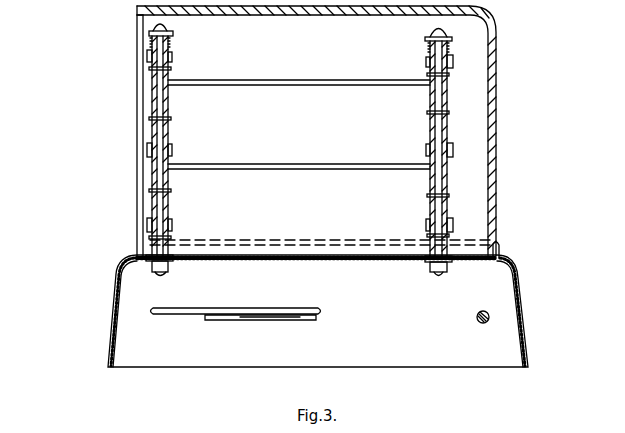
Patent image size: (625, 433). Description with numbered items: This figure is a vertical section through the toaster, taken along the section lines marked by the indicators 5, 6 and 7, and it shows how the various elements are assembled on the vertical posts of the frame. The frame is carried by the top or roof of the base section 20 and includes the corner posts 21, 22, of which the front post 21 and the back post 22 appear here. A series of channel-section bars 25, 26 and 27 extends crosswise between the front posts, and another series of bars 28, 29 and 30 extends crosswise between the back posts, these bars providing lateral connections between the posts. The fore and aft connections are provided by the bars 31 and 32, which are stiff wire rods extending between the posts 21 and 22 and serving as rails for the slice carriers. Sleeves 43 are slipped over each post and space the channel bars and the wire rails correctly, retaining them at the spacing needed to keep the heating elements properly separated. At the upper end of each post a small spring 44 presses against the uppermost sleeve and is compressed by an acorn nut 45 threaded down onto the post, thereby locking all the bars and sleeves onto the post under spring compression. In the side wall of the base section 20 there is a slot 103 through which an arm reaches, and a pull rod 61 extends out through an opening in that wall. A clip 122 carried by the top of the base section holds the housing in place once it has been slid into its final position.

The section line 5 is at (150, 271).
The section line 6 is at (57, 290).
The section line 7 is at (197, 18).
The base section 20 is at (210, 369).
The corner post 21 is at (160, 118).
The corner post 22 is at (438, 118).
The bar 25 is at (150, 59).
The bar 26 is at (150, 151).
The bar 27 is at (150, 226).
The bar 28 is at (450, 62).
The bar 29 is at (450, 152).
The bar 30 is at (452, 228).
The bar 31 is at (318, 80).
The bar 32 is at (332, 164).
The sleeve 43 is at (170, 68).
The spring 44 is at (170, 44).
The acorn nut 45 is at (173, 29).
The pull rod 61 is at (489, 319).
The slot 103 is at (194, 308).
The clip 122 is at (500, 249).